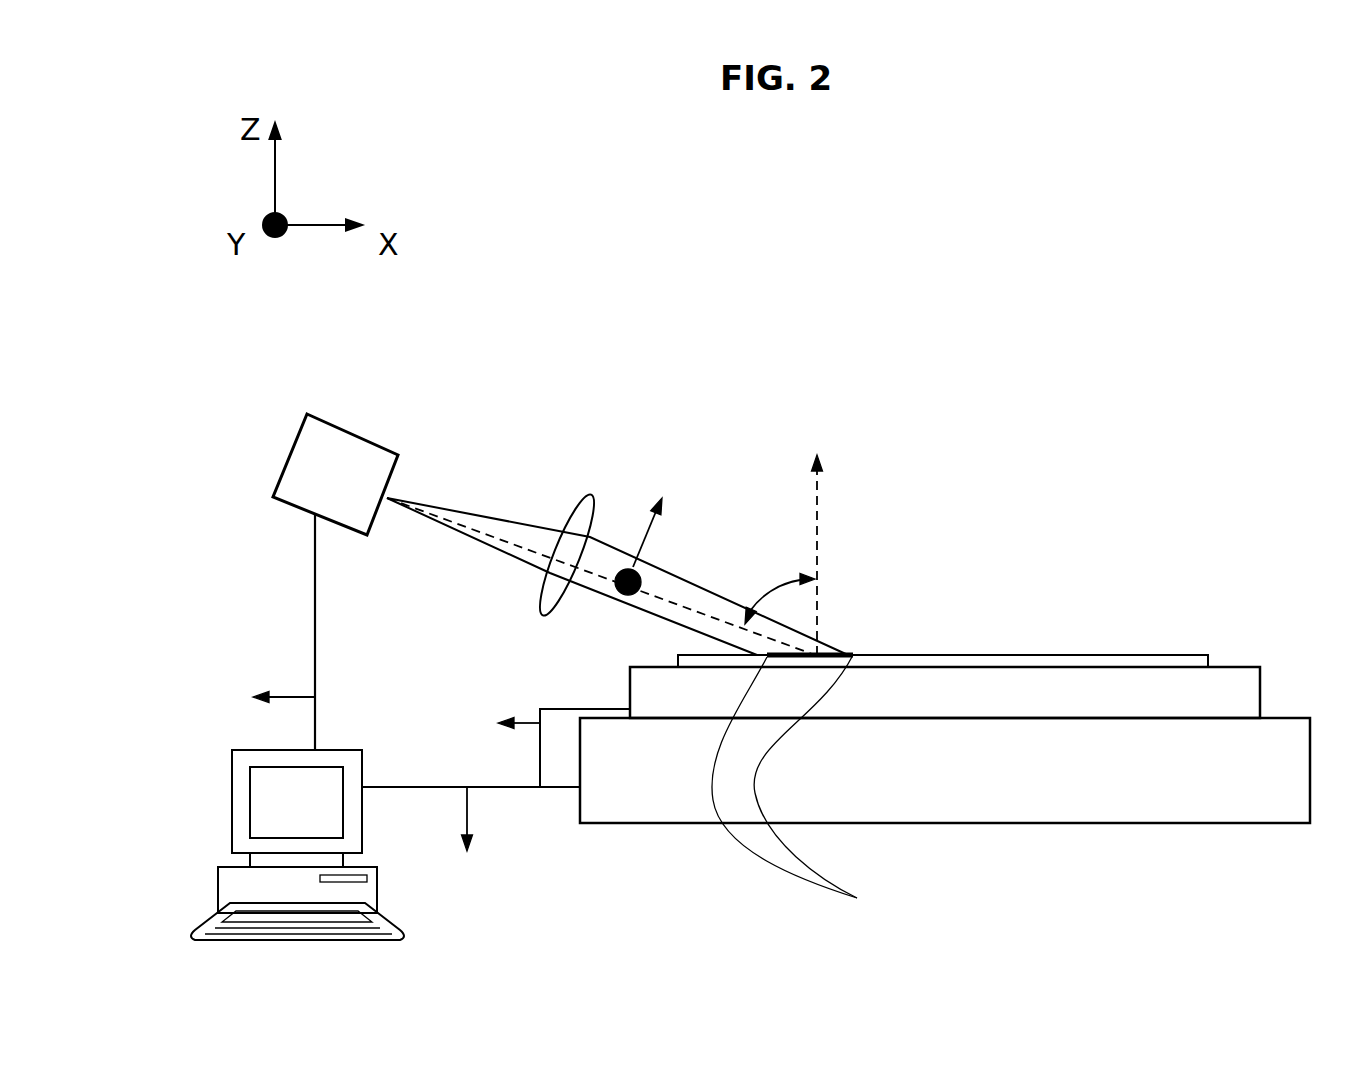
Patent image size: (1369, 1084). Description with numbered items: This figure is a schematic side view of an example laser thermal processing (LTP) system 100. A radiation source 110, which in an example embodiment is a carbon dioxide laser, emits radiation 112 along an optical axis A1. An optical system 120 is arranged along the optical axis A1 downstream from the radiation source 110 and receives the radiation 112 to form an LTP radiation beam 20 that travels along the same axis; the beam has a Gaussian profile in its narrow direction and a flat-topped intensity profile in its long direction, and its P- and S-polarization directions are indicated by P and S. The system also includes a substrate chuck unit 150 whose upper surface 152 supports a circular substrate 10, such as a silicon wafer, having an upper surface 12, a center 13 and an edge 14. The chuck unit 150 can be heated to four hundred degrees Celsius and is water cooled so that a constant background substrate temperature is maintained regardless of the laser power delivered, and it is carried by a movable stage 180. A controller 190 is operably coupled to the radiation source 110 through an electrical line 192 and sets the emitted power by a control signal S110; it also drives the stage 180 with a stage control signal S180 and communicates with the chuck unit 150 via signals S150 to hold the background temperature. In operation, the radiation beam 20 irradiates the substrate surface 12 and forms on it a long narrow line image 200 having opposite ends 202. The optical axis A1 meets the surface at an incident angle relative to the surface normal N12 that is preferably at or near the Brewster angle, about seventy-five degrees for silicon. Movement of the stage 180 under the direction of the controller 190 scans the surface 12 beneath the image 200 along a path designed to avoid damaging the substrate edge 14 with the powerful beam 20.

The LTP system 100 is at (1100, 358).
The radiation source 110 is at (340, 429).
The radiation 112 is at (480, 543).
The optical system 120 is at (590, 500).
The electrical line 192 is at (314, 571).
The controller 190 is at (297, 845).
The substrate chuck unit 150 is at (945, 692).
The upper surface 152 is at (1235, 665).
The movable stage 180 is at (945, 770).
The substrate 10 is at (1185, 607).
The upper surface 12 is at (1020, 655).
The center 13 is at (961, 614).
The edge 14 is at (677, 656).
The LTP radiation beam 20 is at (667, 593).
The image 200 is at (828, 655).
The ends 202 is at (814, 789).
The optical axis A1 is at (455, 512).
The P-polarization direction P is at (660, 500).
The S-polarization direction S is at (624, 594).
The surface normal N12 is at (818, 502).
The control signal S110 is at (282, 697).
The signals S150 is at (500, 727).
The stage control signal S180 is at (468, 813).